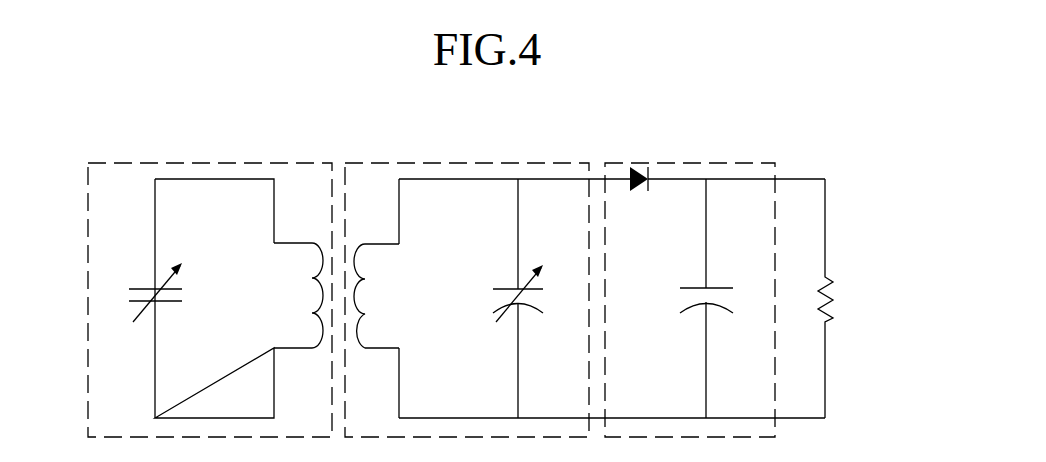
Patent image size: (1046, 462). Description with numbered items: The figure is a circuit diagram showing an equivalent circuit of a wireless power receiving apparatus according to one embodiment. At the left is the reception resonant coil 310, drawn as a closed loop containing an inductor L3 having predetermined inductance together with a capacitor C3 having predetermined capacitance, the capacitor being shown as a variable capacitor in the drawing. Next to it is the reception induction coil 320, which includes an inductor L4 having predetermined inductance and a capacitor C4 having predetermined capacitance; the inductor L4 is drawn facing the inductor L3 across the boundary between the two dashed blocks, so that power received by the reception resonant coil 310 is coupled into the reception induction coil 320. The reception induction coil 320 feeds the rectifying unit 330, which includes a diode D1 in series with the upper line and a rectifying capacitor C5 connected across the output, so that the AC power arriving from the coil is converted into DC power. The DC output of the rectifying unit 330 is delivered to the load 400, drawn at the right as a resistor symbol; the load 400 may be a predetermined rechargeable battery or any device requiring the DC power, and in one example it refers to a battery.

The reception resonant coil 310 is at (210, 271).
The reception induction coil 320 is at (585, 271).
The rectifying unit 330 is at (690, 271).
The load 400 is at (840, 280).
The capacitor C3 is at (140, 292).
The inductor L3 is at (297, 295).
The inductor L4 is at (380, 296).
The capacitor C4 is at (536, 298).
The diode D1 is at (640, 161).
The rectifying capacitor C5 is at (723, 298).